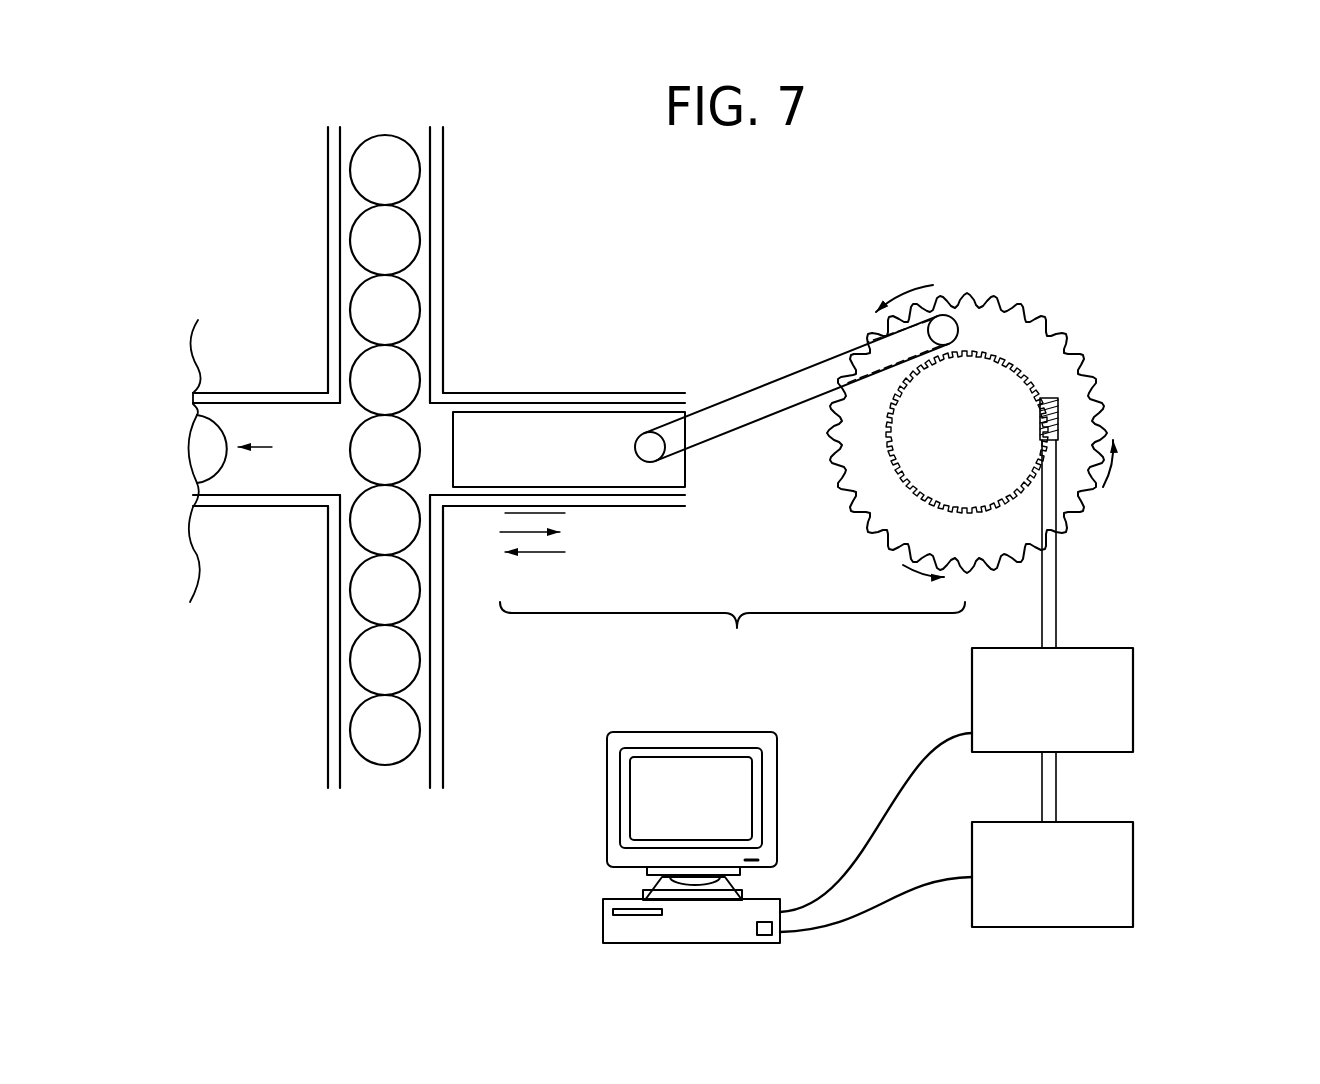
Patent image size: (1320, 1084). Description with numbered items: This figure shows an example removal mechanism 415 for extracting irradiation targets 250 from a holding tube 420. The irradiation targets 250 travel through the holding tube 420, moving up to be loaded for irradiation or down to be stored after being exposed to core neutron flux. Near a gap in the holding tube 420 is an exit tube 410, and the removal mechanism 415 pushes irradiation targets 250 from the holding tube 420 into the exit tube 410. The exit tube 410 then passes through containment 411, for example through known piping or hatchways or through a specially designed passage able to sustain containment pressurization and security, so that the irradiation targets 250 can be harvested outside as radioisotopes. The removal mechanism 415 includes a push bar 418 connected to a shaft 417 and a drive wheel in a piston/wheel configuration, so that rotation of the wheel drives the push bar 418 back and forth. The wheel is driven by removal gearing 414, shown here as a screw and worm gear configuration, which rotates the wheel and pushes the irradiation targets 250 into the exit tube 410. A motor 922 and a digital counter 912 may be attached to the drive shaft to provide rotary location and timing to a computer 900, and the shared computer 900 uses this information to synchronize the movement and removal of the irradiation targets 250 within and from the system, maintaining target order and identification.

The irradiation target 250 is at (373, 240).
The exit tube 410 is at (298, 484).
The containment 411 is at (174, 411).
The removal gearing 414 is at (1058, 560).
The removal mechanism 415 is at (732, 634).
The shaft 417 is at (757, 391).
The push bar 418 is at (515, 462).
The holding tube 420 is at (440, 325).
The computer 900 is at (579, 912).
The digital counter 912 is at (1139, 704).
The motor 922 is at (1139, 876).